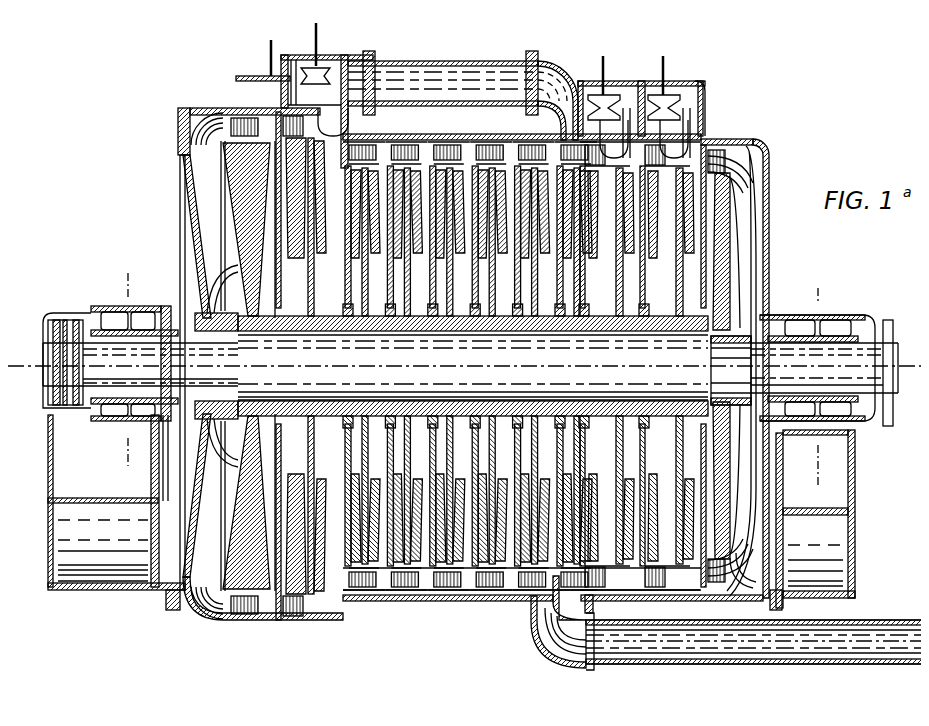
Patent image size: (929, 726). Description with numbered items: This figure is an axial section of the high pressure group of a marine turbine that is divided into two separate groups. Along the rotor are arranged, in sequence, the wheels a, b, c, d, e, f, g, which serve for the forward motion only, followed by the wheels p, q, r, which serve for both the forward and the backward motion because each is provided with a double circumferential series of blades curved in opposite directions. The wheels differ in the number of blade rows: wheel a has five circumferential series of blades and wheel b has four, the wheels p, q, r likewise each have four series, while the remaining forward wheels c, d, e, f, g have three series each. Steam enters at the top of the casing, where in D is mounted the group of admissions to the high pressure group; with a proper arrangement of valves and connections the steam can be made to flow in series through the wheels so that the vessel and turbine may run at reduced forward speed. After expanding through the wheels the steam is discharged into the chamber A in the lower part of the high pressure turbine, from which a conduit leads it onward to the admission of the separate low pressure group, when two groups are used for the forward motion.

The group of admissions D is at (170, 117).
The wheel a is at (281, 77).
The wheel b is at (306, 111).
The wheel c is at (348, 133).
The wheel d is at (395, 133).
The wheel e is at (443, 133).
The wheel f is at (477, 133).
The wheel g is at (523, 133).
The wheel p is at (591, 146).
The wheel q is at (651, 146).
The wheel r is at (742, 139).
The chamber A is at (547, 645).